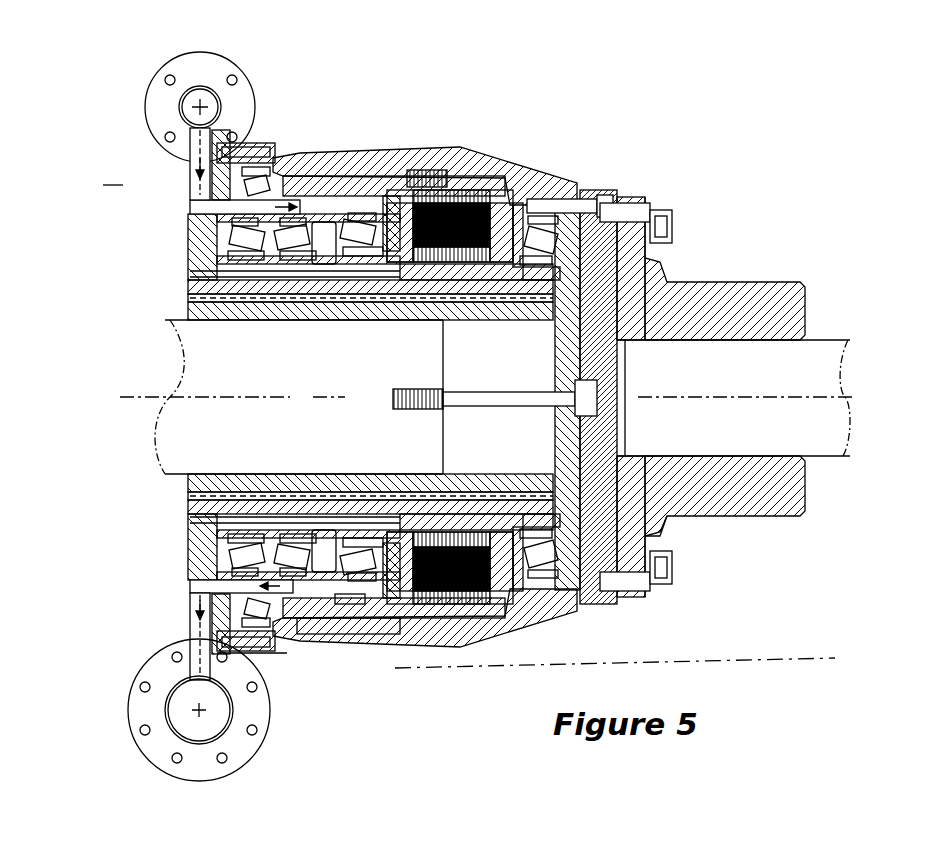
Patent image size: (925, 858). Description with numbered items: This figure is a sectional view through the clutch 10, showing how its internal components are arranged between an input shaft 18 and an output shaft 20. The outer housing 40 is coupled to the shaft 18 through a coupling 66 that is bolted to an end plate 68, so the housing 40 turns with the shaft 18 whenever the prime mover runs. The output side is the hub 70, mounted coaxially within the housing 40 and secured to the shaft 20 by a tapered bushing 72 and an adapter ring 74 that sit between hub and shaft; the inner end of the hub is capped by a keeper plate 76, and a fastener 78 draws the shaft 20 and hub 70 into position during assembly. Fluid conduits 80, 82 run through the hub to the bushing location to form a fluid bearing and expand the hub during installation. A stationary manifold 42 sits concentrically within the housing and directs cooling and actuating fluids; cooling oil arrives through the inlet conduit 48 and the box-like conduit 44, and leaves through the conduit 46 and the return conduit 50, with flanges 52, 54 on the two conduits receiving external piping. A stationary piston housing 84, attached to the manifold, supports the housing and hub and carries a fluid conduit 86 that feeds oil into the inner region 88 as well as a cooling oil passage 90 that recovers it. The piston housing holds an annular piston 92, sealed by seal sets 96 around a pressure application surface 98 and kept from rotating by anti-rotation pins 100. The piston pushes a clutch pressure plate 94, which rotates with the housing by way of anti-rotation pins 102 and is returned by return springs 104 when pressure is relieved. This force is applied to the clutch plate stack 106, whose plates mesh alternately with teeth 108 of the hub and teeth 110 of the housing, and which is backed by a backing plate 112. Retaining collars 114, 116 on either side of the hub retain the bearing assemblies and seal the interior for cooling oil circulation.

The clutch 10 is at (543, 130).
The shaft 18 is at (762, 384).
The shaft 20 is at (320, 369).
The outer housing 40 is at (550, 193).
The manifold 42 is at (195, 216).
The fluid conduit 44 is at (197, 147).
The fluid conduit 46 is at (197, 623).
The inlet conduit 48 is at (207, 100).
The conduit 50 is at (190, 720).
The flanges 52 is at (213, 65).
The flanges 54 is at (200, 767).
The coupling 66 is at (737, 288).
The end plate 68 is at (622, 287).
The hub 70 is at (630, 545).
The tapered bushing 72 is at (190, 494).
The adapter ring 74 is at (190, 478).
The keeper plate 76 is at (612, 500).
The fastener 78 is at (467, 402).
The fluid conduit 80 is at (667, 222).
The fluid conduit 82 is at (598, 612).
The piston housing 84 is at (318, 205).
The fluid conduit 86 is at (287, 193).
The inner region 88 is at (280, 287).
The cooling oil passage 90 is at (287, 650).
The annular piston 92 is at (385, 168).
The clutch pressure plate 94 is at (392, 245).
The seal sets 96 is at (330, 600).
The pressure application surface 98 is at (340, 622).
The anti-rotation pins 100 is at (333, 266).
The anti-rotation pins 102 is at (450, 190).
The return springs 104 is at (436, 188).
The clutch plate stack 106 is at (612, 181).
The teeth 108 is at (455, 262).
The teeth 110 is at (510, 230).
The backing plate 112 is at (620, 196).
The retaining collar 114 is at (193, 266).
The retaining collar 116 is at (667, 583).